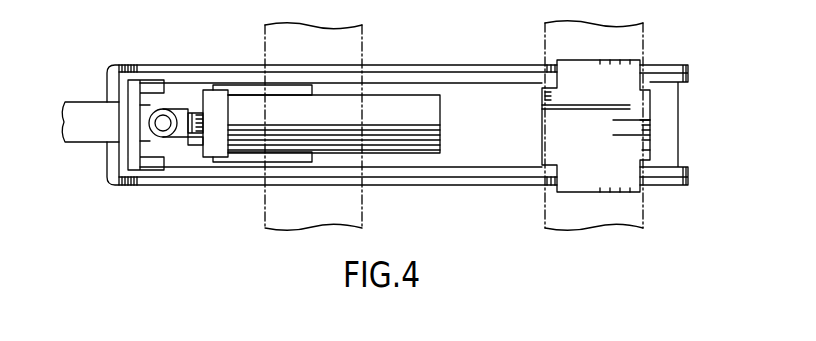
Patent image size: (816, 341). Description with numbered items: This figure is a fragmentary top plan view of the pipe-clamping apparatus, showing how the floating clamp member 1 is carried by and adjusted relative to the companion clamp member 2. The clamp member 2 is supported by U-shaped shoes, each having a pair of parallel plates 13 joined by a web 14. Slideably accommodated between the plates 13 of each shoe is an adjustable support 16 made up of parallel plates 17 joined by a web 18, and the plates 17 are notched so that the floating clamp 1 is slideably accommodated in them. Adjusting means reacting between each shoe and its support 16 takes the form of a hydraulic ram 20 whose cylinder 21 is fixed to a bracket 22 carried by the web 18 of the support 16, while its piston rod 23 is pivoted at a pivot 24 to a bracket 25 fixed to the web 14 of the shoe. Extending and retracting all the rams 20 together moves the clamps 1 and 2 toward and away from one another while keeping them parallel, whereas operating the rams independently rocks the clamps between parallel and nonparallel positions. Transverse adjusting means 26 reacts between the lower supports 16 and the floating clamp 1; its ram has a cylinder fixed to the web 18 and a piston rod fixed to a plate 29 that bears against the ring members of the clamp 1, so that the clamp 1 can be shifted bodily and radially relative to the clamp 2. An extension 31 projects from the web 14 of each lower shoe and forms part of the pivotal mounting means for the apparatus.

The annular clamp member 1 is at (646, 47).
The annular clamp member 2 is at (366, 48).
The parallel plates 13 is at (247, 68).
The web 14 is at (109, 84).
The adjustable support 16 is at (688, 71).
The parallel plates 17 is at (473, 85).
The web 18 is at (494, 134).
The hydraulic ram 20 is at (192, 145).
The cylinder 21 is at (406, 122).
The bracket 22 is at (277, 88).
The piston rod 23 is at (195, 112).
The pivot 24 is at (158, 124).
The bracket 25 is at (153, 140).
The transverse adjusting means 26 is at (656, 129).
The plate 29 is at (609, 152).
The extension 31 is at (74, 112).